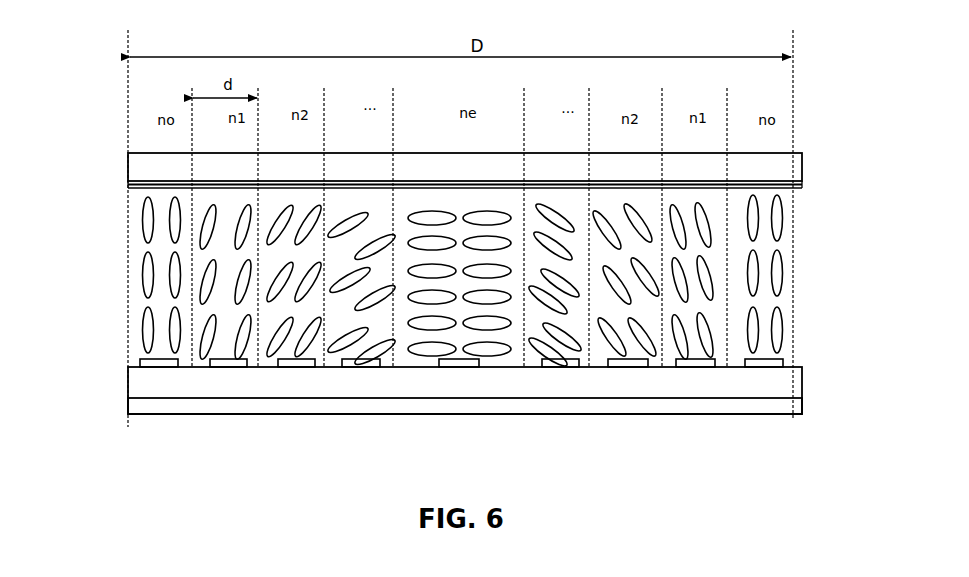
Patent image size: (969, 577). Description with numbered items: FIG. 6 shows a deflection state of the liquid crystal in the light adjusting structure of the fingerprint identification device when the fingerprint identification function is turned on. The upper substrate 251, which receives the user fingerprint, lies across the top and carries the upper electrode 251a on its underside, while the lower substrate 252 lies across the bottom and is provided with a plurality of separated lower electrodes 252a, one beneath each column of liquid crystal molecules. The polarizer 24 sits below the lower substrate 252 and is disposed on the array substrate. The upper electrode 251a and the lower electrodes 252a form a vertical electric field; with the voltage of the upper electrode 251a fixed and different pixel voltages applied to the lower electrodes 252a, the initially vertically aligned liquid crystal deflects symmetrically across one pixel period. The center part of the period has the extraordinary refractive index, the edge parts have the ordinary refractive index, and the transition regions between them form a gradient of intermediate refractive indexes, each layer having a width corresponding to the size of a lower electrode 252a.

The upper substrate 251 is at (785, 168).
The upper electrode 251a is at (790, 185).
The lower substrate 252 is at (782, 386).
The lower electrodes 252a is at (140, 358).
The polarizer 24 is at (738, 404).